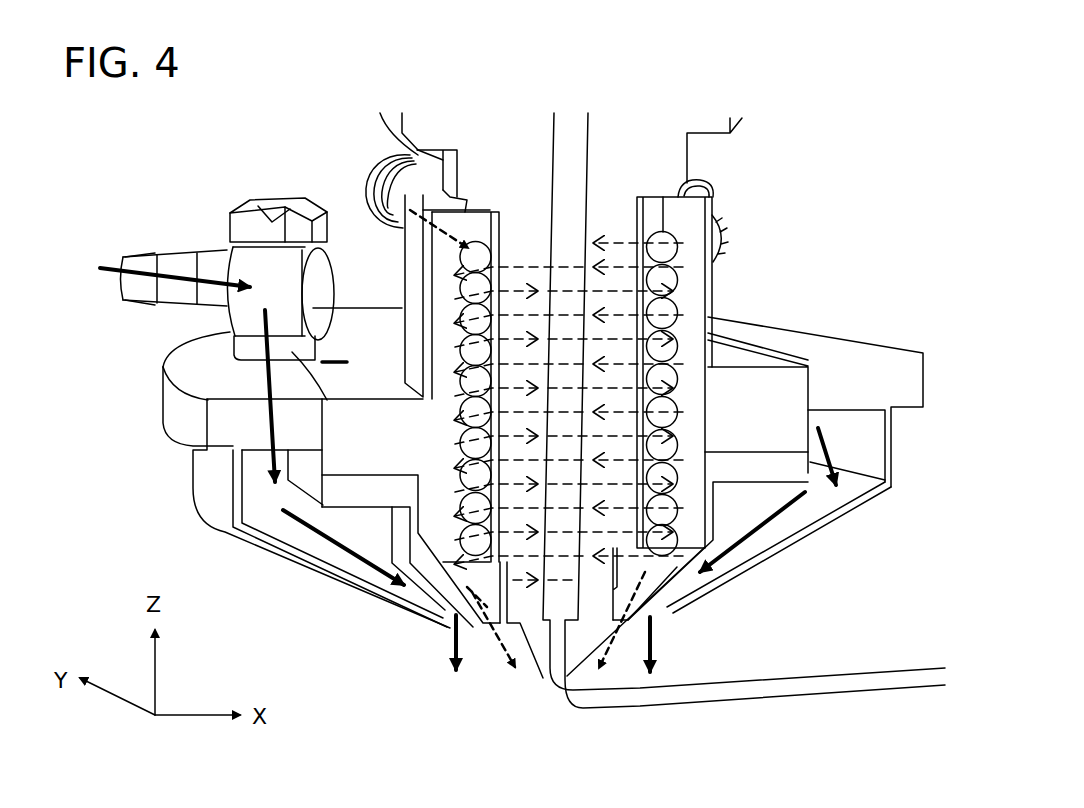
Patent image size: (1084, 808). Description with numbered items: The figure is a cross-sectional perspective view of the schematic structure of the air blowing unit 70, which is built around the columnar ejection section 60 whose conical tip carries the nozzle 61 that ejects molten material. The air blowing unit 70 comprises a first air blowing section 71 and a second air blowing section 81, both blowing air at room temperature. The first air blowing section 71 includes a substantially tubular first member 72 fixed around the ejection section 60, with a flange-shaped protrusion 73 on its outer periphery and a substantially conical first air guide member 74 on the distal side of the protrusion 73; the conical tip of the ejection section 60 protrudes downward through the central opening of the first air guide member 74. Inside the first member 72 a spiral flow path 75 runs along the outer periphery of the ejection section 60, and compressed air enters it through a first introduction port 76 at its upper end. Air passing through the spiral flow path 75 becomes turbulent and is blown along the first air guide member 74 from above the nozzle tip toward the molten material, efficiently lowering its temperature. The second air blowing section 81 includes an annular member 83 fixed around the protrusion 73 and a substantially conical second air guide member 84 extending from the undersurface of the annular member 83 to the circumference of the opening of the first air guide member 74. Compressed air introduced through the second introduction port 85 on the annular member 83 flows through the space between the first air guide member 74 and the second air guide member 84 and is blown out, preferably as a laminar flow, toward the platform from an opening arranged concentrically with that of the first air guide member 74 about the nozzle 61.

The ejection section 60 is at (620, 215).
The nozzle 61 is at (550, 688).
The air blowing unit 70 is at (136, 165).
The first air blowing section 71 is at (488, 662).
The first member 72 is at (698, 332).
The protrusion 73 is at (750, 393).
The first air guide member 74 is at (680, 592).
The flow path 75 is at (465, 292).
The first introduction port 76 is at (358, 170).
The second air blowing section 81 is at (380, 623).
The annular member 83 is at (177, 410).
The second air guide member 84 is at (307, 562).
The second introduction port 85 is at (193, 247).